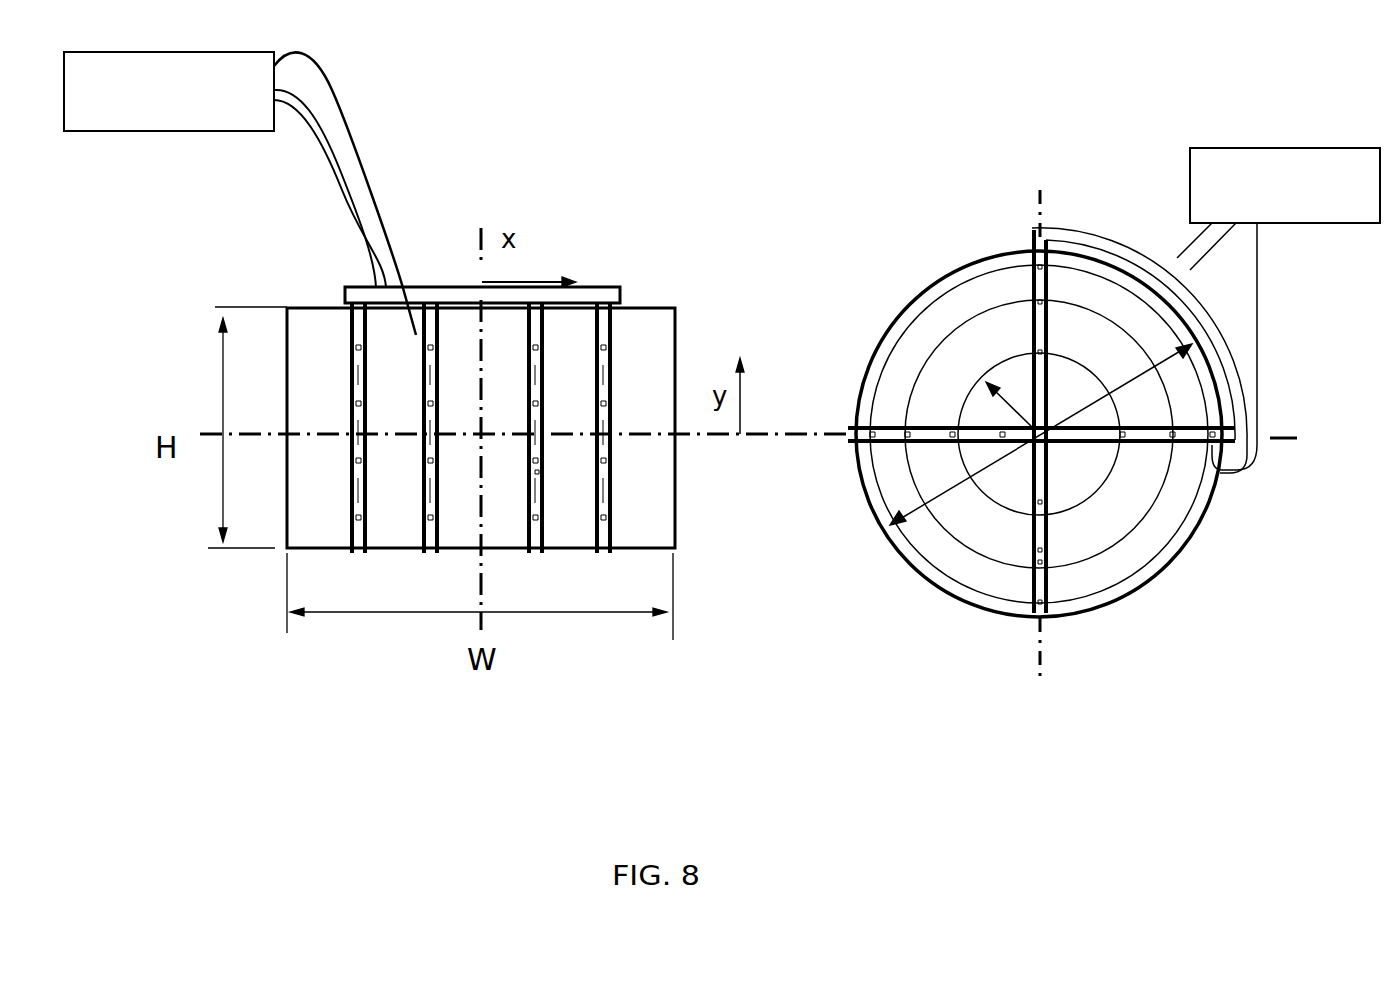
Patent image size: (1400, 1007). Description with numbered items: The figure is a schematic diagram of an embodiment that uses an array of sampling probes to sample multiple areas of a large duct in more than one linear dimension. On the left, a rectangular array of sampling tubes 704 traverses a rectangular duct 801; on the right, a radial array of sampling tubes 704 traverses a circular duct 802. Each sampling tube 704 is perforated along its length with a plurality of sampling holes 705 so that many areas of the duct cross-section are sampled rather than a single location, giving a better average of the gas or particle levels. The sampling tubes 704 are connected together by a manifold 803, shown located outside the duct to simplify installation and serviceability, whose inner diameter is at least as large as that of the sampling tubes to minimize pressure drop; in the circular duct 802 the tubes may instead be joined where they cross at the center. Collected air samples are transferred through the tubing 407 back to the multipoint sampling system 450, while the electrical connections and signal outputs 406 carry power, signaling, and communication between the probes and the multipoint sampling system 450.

The multipoint air sampling system 450 is at (722, 137).
The electrical connections and signal outputs 406 is at (350, 100).
The second tube 407 is at (1275, 258).
The rectangular duct 801 is at (640, 300).
The circular duct 802 is at (1075, 252).
The manifold 803 is at (410, 287).
The sampling tubes 704 is at (928, 445).
The sampling holes 705 is at (1030, 563).